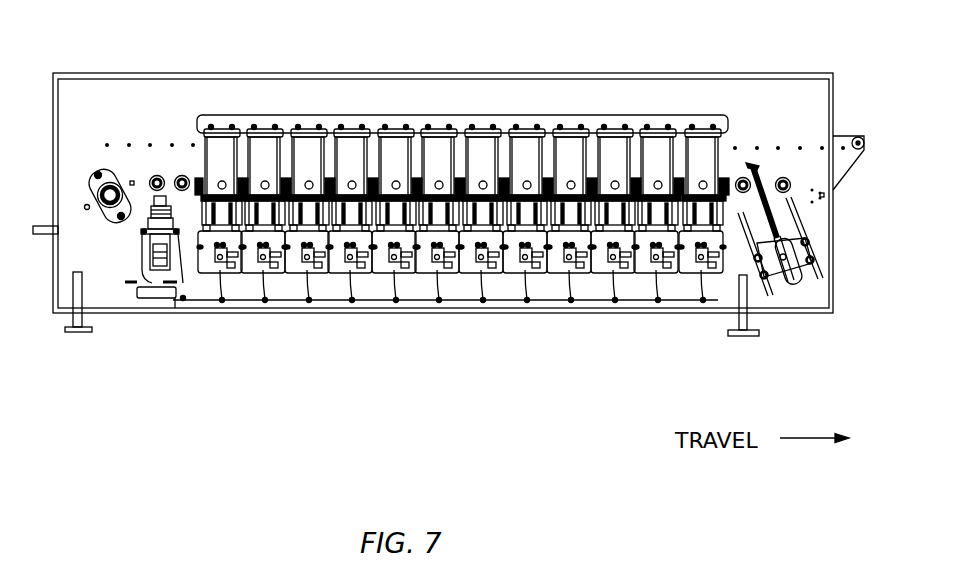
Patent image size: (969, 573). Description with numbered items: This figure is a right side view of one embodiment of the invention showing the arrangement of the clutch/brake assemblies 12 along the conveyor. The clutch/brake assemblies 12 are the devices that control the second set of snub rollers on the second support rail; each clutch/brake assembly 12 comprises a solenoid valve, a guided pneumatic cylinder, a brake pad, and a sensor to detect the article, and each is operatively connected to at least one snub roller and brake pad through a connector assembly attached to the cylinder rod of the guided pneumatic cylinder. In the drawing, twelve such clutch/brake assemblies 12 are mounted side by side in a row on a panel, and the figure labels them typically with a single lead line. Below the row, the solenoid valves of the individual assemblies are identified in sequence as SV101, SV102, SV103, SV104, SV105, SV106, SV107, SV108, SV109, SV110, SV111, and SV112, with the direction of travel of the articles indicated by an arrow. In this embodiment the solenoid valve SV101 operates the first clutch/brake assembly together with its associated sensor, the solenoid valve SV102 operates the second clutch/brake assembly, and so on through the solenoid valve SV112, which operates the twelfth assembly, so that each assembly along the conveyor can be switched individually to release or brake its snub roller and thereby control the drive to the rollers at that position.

The clutch/brake assembly 12 is at (393, 160).
The solenoid valve SV101 is at (222, 300).
The solenoid valve SV102 is at (265, 300).
The solenoid valve SV103 is at (309, 300).
The solenoid valve SV104 is at (352, 300).
The solenoid valve SV105 is at (466, 233).
The solenoid valve SV106 is at (439, 300).
The solenoid valve SV107 is at (483, 300).
The solenoid valve SV108 is at (527, 300).
The solenoid valve SV109 is at (571, 300).
The solenoid valve SV110 is at (615, 300).
The solenoid valve SV111 is at (658, 300).
The solenoid valve SV112 is at (703, 300).